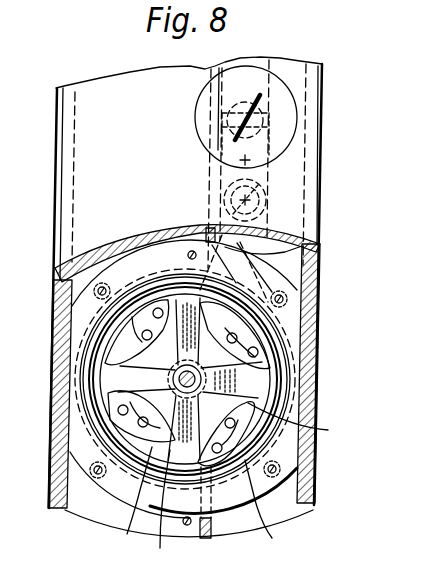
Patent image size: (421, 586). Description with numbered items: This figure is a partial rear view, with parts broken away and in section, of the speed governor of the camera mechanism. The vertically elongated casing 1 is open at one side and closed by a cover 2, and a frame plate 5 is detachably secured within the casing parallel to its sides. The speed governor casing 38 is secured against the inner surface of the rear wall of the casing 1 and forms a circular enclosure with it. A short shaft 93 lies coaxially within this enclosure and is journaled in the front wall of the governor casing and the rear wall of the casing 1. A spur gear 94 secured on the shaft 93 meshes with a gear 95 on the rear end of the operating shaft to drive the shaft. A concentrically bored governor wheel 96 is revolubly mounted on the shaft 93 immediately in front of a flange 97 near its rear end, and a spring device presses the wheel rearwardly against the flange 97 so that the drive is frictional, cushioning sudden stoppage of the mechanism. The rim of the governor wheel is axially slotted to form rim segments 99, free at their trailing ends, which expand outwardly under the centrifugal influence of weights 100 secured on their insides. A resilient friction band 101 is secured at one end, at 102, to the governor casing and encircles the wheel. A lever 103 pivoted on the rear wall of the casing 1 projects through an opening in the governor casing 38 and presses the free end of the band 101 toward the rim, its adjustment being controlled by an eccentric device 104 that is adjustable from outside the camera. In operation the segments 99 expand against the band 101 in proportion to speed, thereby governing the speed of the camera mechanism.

The casing 1 is at (313, 92).
The cover 2 is at (53, 504).
The frame plate 5 is at (206, 532).
The speed governor casing 38 is at (90, 443).
The short shaft 93 is at (172, 379).
The spur gear 94 is at (119, 502).
The gear 95 is at (309, 424).
The governor wheel 96 is at (252, 374).
The flange 97 is at (269, 509).
The rim segments 99 is at (125, 350).
The weights 100 is at (135, 350).
The resilient friction band 101 is at (152, 512).
The securing point of friction band 102 is at (207, 280).
The lever 103 is at (320, 262).
The eccentric device 104 is at (258, 126).